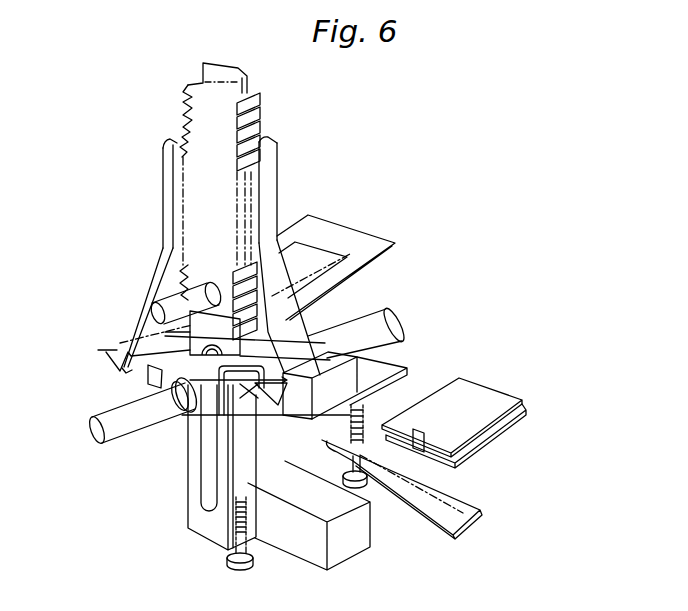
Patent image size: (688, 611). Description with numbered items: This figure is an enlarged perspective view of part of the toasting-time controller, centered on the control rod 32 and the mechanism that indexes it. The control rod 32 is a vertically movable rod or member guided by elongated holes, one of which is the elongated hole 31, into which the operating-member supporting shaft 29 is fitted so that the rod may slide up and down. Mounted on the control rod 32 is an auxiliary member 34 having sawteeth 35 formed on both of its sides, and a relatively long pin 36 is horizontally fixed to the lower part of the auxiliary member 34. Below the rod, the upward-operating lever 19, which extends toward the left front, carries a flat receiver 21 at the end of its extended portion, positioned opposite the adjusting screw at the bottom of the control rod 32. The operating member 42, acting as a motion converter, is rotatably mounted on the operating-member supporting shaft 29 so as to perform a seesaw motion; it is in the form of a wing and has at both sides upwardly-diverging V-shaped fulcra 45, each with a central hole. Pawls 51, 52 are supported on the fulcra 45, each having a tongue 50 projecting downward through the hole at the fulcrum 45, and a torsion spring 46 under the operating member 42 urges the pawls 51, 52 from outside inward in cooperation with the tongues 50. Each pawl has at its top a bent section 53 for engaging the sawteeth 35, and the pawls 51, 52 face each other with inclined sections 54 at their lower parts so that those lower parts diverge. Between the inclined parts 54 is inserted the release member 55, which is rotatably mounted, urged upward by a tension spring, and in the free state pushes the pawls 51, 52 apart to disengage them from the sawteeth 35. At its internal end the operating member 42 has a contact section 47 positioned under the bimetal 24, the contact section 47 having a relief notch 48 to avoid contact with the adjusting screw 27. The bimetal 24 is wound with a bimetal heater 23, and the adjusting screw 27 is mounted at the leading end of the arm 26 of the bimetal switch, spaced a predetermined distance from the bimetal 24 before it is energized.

The upward-operating lever 19 is at (340, 545).
The flat receiver 21 is at (263, 503).
The bimetal heater 23 is at (491, 397).
The bimetal 24 is at (424, 385).
The arm 26 is at (453, 498).
The adjusting screw 27 is at (363, 488).
The operating-member supporting shaft 29 is at (390, 323).
The elongated hole 31 is at (200, 462).
The control rod 32 is at (193, 510).
The auxiliary member 34 is at (196, 105).
The sawteeth 35 is at (263, 107).
The pin 36 is at (150, 305).
The operating member 42 is at (118, 343).
The V-shaped fulcrum 45 is at (122, 373).
The torsion spring 46 is at (247, 393).
The contact section 47 is at (330, 403).
The relief notch 48 is at (398, 365).
The tongue 50 is at (162, 387).
The pawl 51 is at (170, 163).
The pawl 52 is at (270, 180).
The bent section 53 is at (187, 137).
The inclined section 54 is at (284, 268).
The release member 55 is at (357, 275).